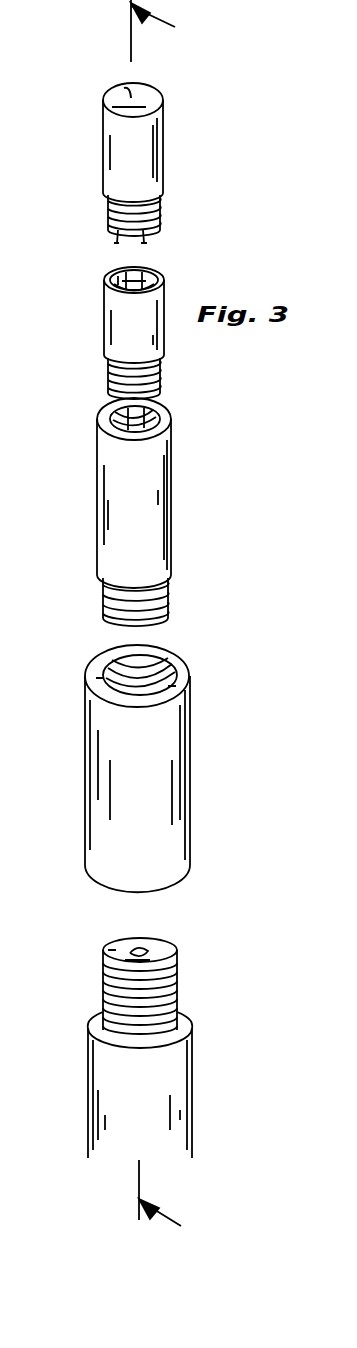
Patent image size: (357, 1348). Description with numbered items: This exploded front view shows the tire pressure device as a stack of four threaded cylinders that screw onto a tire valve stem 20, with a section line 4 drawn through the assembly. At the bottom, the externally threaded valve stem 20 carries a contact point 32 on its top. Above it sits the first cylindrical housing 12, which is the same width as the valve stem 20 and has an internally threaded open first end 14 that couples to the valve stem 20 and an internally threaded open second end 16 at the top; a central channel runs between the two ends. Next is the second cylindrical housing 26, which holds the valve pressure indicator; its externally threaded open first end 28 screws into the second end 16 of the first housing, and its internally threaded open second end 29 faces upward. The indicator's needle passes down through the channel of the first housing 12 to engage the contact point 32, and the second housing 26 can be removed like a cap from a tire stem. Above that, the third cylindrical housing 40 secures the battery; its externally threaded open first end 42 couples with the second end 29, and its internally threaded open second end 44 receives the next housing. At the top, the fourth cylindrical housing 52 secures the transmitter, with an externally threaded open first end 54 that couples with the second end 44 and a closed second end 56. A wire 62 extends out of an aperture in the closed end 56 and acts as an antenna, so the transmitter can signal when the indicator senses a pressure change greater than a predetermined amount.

The section line 4- 4 is at (167, 619).
The first cylindrical housing 12 is at (178, 775).
The internally threaded open first end 14 is at (168, 890).
The internally threaded open second end 16 is at (158, 672).
The valve stem 20 is at (175, 1075).
The second cylindrical housing 26 is at (157, 514).
The externally threaded open first end 28 is at (160, 612).
The internally threaded open second end 29 is at (150, 416).
The contact point 32 is at (141, 958).
The third cylindrical housing 40 is at (156, 305).
The externally threaded open first end 42 is at (158, 380).
The internally threaded open second end 44 is at (150, 275).
The fourth cylindrical housing 52 is at (143, 151).
The externally threaded open first end 54 is at (157, 229).
The closed second end 56 is at (150, 100).
The wire 62 is at (130, 94).